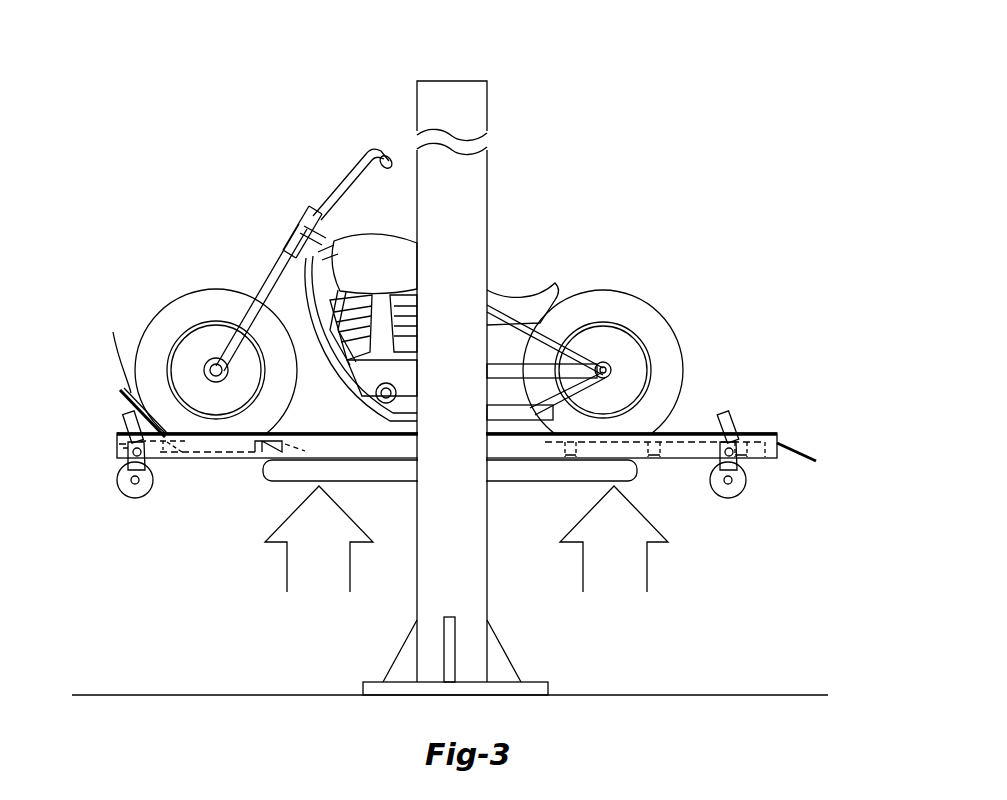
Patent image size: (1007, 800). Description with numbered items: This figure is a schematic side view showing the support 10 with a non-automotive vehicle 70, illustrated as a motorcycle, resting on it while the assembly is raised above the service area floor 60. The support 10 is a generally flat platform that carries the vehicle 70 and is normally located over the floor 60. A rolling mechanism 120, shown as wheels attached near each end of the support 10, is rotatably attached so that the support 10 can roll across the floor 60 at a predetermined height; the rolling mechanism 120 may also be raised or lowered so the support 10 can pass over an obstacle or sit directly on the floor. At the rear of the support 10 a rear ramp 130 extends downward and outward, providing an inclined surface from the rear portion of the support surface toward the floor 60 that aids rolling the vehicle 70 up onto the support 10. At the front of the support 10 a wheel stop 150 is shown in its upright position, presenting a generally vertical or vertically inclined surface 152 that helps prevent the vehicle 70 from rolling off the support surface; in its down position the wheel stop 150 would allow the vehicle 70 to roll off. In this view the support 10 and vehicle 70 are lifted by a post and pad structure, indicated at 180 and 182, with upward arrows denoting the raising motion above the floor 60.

The support 10 is at (774, 404).
The service area floor 60 is at (687, 695).
The non-automotive vehicle 70 is at (292, 224).
The rolling mechanism 120 is at (150, 495).
The rear ramp 130 is at (803, 447).
The wheel stop 150 is at (122, 400).
The vertically inclined surface 152 is at (113, 349).
The lift post 180 is at (487, 201).
The lift pad 182 is at (268, 470).